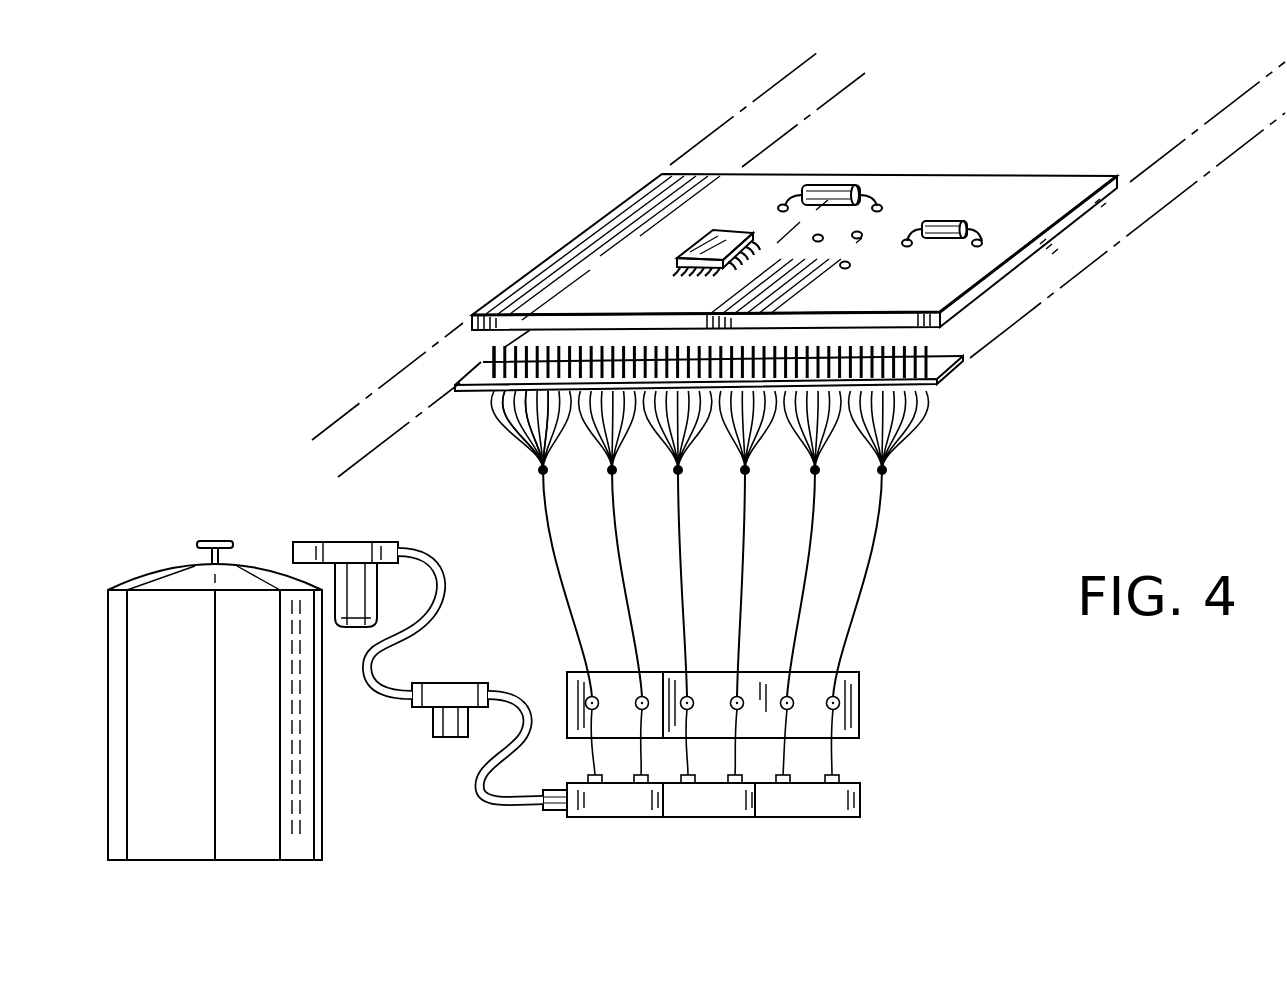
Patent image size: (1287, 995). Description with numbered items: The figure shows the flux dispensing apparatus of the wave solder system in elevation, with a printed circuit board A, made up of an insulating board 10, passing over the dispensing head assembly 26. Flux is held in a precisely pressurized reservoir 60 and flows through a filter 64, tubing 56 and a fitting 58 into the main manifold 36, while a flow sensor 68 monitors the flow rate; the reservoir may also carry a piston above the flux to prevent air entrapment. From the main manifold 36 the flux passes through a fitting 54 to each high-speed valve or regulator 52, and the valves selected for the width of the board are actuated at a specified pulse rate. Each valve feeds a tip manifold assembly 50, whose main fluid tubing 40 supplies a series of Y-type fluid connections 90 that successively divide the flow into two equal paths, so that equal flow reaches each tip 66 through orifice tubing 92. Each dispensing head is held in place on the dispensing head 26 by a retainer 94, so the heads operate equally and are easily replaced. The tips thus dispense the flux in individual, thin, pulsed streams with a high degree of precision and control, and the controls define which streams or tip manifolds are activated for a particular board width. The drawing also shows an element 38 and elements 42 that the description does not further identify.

The board 10 is at (822, 168).
The printed circuit board A is at (982, 180).
The dispensing head assembly 26 is at (950, 374).
The tip 66 is at (487, 367).
The retainer 94 is at (490, 366).
The orifice tubing 92 is at (474, 400).
The Y-type fluid connections 90 is at (543, 472).
The tip manifold assembly 50 is at (935, 447).
The main fluid tubing 40 is at (900, 566).
The distribution plate 38 is at (880, 692).
The high-speed valves or regulators 52 is at (840, 698).
The tubes 42 is at (832, 755).
The fitting 54 is at (840, 779).
The main manifold 36 is at (735, 830).
The fitting 58 is at (553, 810).
The pressurized reservoir 60 is at (160, 555).
The filter 64 is at (355, 546).
The flow sensor 68 is at (449, 695).
The tubing 56 is at (483, 772).